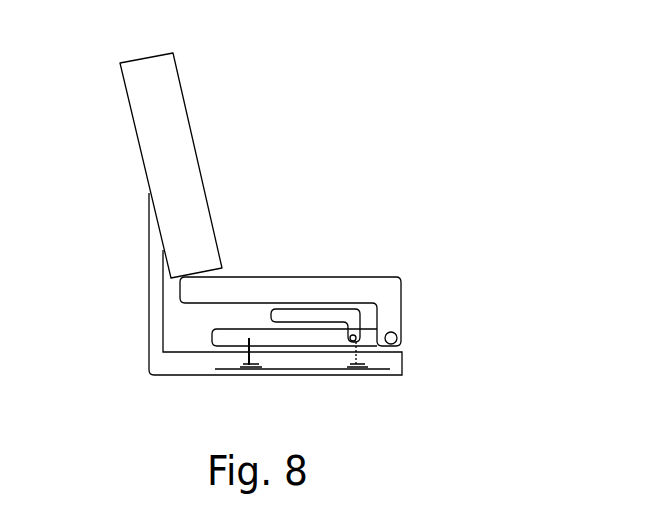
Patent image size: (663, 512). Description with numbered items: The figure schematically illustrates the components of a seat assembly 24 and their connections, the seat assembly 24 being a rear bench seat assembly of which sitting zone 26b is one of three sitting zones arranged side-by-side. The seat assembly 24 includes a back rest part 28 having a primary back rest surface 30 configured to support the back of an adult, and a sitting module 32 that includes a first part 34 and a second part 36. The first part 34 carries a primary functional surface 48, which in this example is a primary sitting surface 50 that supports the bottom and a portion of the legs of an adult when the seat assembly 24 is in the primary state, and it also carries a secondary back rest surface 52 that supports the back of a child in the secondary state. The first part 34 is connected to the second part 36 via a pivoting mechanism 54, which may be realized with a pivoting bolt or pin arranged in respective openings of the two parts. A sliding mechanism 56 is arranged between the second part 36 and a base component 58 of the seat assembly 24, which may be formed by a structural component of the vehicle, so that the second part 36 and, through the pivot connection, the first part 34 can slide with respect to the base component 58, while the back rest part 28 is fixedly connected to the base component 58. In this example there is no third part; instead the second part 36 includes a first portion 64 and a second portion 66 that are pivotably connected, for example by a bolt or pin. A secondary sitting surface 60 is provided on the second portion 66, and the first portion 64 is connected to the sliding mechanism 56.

The seat assembly 24 is at (366, 159).
The sitting zone 26b is at (264, 137).
The back rest part 28 is at (150, 100).
The primary back rest surface 30 is at (187, 94).
The sitting module 32 is at (464, 347).
The first part 34 is at (311, 283).
The second part 36 is at (311, 320).
The primary functional surface 48 is at (290, 271).
The primary sitting surface 50 is at (256, 276).
The secondary back rest surface 52 is at (210, 312).
The pivoting mechanism 54 is at (411, 328).
The sliding mechanism 56 is at (411, 350).
The base component 58 is at (173, 362).
The secondary sitting surface 60 is at (354, 301).
The first portion 64 is at (222, 341).
The second portion 66 is at (327, 309).